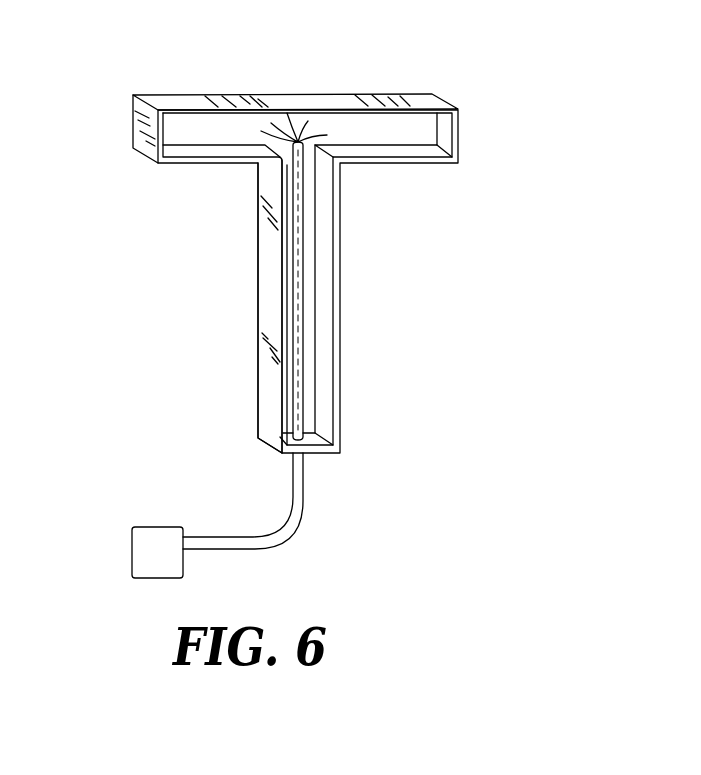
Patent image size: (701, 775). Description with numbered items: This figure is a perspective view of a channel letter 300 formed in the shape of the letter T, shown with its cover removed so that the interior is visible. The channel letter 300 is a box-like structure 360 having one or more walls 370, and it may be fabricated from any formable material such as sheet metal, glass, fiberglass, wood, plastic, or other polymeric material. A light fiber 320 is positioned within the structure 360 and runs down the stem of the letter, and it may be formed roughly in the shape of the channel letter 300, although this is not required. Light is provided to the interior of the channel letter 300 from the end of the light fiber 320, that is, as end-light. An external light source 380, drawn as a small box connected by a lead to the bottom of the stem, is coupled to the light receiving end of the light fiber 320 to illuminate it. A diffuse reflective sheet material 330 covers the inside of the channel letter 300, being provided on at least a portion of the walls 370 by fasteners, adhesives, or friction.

The channel letter 300 is at (341, 235).
The light fiber 320 is at (298, 285).
The diffuse reflective sheet material 330 is at (196, 164).
The structure 360 is at (338, 393).
The walls 370 is at (441, 133).
The external light source 380 is at (152, 523).